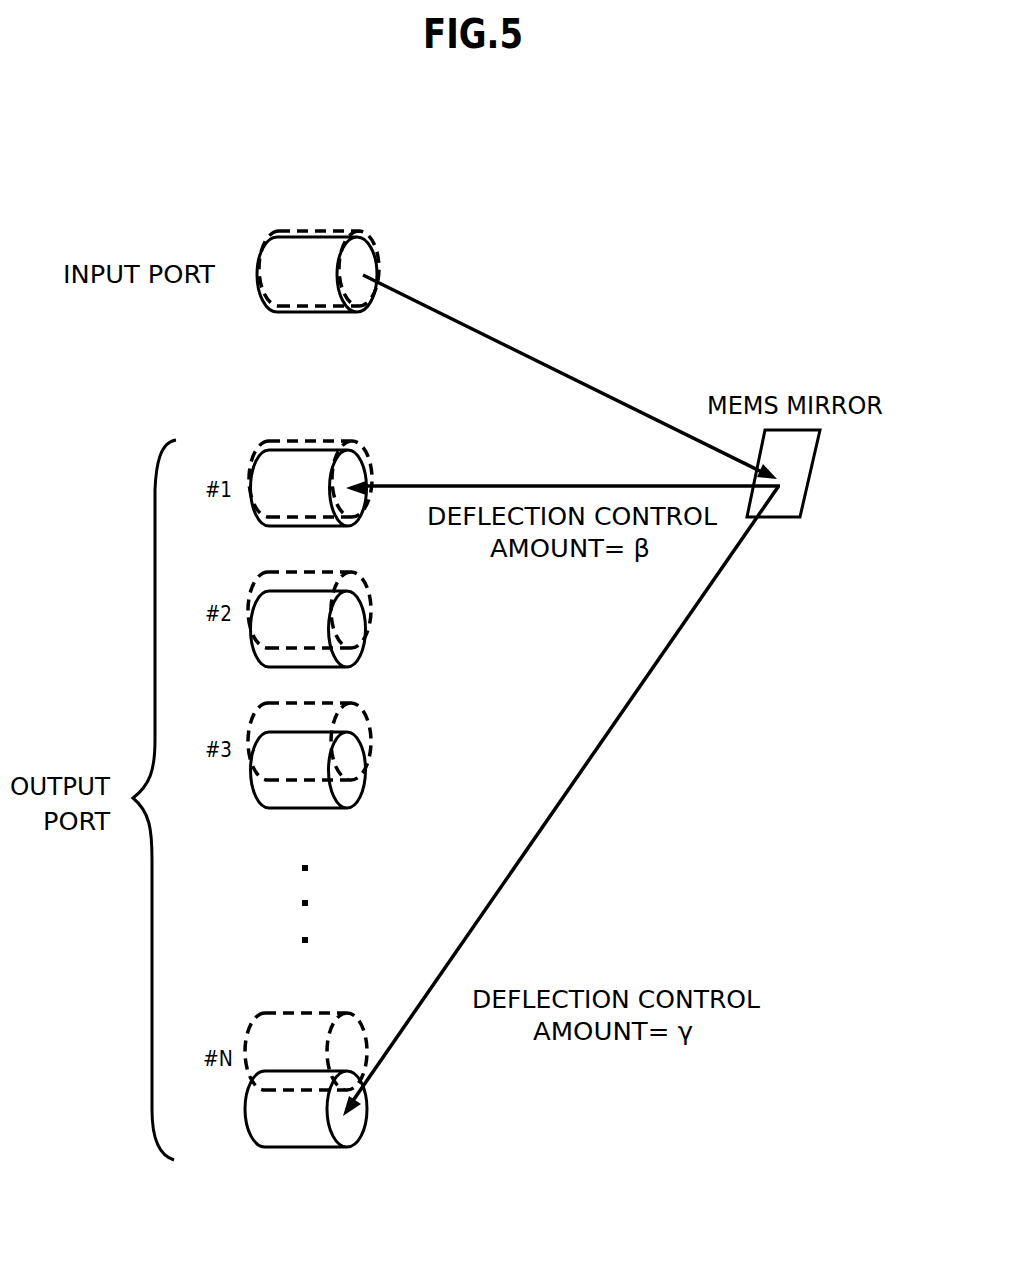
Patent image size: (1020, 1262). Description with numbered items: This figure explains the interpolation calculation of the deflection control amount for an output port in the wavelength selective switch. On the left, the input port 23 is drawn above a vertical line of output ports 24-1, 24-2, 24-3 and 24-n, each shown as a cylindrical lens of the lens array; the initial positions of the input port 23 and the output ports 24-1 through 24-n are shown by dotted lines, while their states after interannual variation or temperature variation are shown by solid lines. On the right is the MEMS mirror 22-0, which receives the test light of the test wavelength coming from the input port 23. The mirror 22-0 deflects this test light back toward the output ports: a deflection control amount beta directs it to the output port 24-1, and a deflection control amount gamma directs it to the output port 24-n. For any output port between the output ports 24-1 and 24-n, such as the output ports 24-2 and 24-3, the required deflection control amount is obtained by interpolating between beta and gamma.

The input port 23 is at (362, 256).
The MEMS mirror 22-0 is at (821, 461).
The output port 24-1 is at (361, 467).
The output port 24-2 is at (360, 610).
The output port 24-3 is at (360, 750).
The output port 24-n is at (357, 1128).